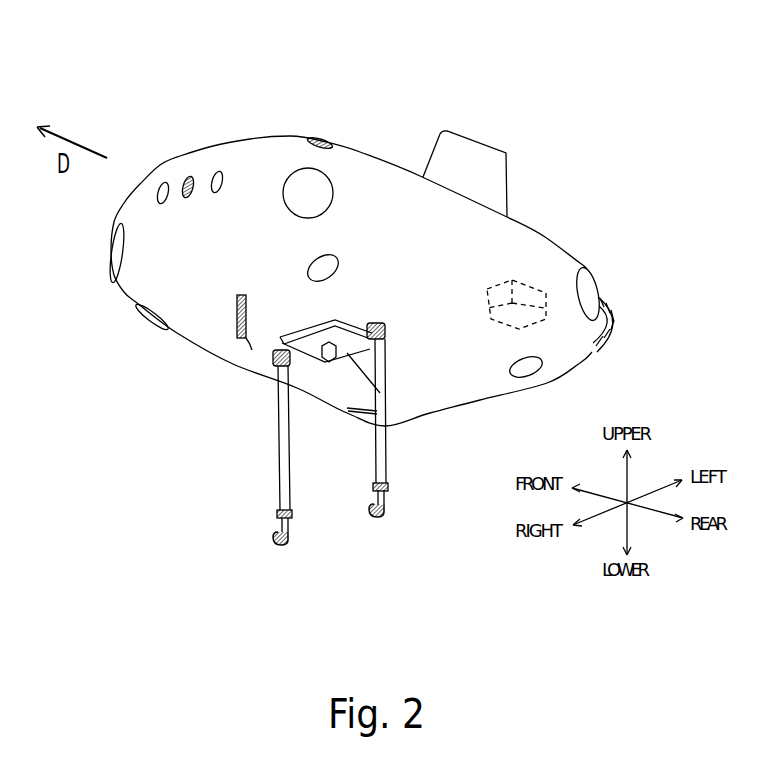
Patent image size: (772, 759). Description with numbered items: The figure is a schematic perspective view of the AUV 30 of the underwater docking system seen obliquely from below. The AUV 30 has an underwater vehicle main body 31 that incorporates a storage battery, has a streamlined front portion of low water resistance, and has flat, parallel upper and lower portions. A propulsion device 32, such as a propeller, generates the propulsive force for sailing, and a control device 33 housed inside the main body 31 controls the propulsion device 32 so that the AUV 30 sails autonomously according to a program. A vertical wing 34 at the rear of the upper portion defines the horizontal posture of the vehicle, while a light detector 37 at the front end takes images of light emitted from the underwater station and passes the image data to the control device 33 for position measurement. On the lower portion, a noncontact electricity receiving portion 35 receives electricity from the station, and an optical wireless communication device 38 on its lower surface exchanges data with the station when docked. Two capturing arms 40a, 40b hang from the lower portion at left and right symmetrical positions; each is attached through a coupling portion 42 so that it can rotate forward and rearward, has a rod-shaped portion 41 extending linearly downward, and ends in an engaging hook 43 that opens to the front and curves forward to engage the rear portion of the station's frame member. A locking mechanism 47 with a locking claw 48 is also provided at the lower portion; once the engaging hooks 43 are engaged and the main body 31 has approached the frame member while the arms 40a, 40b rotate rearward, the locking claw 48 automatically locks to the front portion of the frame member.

The AUV 30 is at (620, 180).
The underwater vehicle main body 31 is at (252, 138).
The propulsion device 32 is at (620, 320).
The control device 33 is at (527, 282).
The vertical wing 34 is at (482, 137).
The noncontact electricity receiving portion 35 is at (272, 340).
The light detector 37 is at (186, 186).
The optical wireless communication device 38 is at (380, 393).
The capturing arm 40a is at (390, 467).
The capturing arm 40b is at (279, 478).
The rod-shaped portion 41 is at (275, 444).
The coupling portion 42 is at (278, 357).
The engaging hook 43 is at (293, 542).
The locking mechanism 47 is at (230, 305).
The locking claw 48 is at (250, 338).